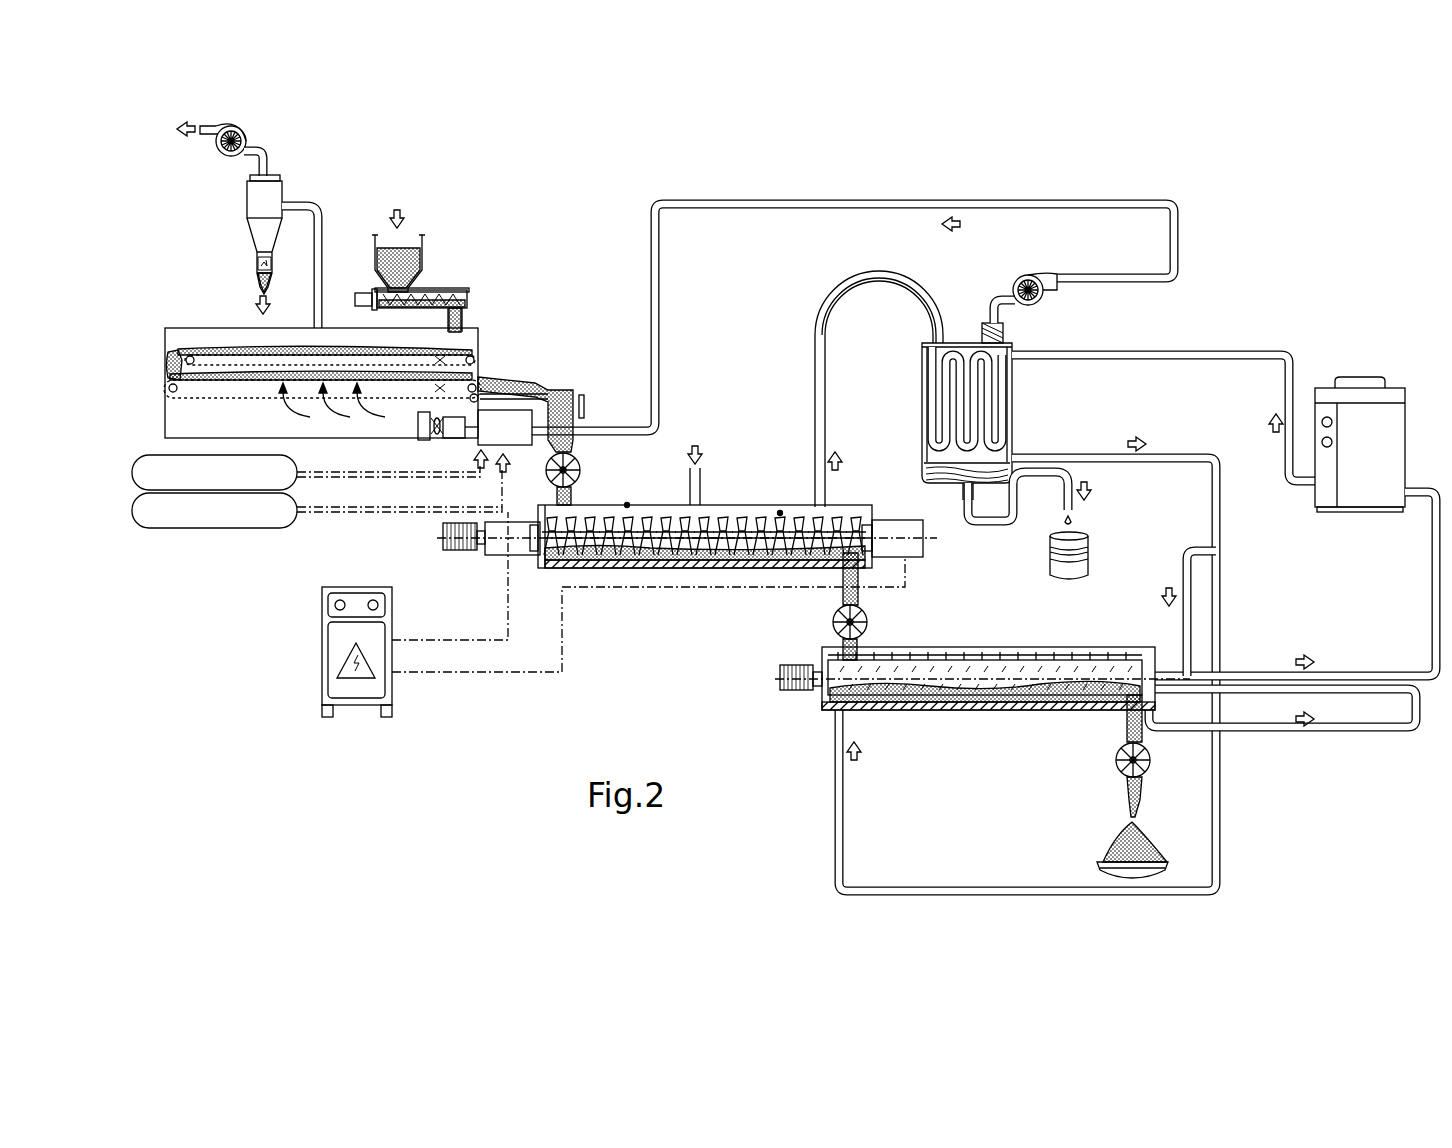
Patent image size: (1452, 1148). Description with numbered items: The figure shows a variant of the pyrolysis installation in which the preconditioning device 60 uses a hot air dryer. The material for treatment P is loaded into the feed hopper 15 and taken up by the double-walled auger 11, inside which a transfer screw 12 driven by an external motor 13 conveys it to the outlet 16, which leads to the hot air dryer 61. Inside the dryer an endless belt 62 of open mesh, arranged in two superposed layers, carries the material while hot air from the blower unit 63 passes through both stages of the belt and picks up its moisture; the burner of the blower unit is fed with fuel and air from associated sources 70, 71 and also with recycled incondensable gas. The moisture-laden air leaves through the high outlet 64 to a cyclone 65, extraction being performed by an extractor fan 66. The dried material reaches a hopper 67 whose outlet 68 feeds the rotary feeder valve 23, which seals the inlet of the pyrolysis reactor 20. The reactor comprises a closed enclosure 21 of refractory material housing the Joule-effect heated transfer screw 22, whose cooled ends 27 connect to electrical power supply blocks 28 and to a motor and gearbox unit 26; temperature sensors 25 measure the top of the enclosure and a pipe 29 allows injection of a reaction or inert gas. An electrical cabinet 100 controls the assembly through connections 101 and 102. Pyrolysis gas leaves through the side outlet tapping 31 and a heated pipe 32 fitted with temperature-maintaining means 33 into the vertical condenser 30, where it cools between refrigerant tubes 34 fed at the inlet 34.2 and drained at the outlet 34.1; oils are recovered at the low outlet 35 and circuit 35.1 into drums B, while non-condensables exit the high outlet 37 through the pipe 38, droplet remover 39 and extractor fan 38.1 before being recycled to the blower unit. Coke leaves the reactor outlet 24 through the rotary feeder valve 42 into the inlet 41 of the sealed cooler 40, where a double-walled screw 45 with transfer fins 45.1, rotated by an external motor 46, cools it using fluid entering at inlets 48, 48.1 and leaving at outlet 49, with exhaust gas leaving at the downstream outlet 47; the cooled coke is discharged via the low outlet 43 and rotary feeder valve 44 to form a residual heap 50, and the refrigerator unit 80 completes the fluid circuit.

The double-walled auger 11 is at (458, 291).
The transfer screw 12 is at (423, 291).
The external motor 13 is at (357, 293).
The feed hopper 15 is at (372, 237).
The outlet 16 is at (478, 296).
The pyrolysis reactor 20 is at (677, 532).
The closed enclosure 21 is at (648, 572).
The transfer screw 22 is at (683, 503).
The rotary feeder valve 23 is at (548, 467).
The outlet 24 is at (843, 598).
The temperature sensors 25 is at (628, 504).
The motor and gearbox unit 26 is at (460, 551).
The ends of the heating screw 27 is at (531, 530).
The blocks 28 is at (494, 556).
The pipe 29 is at (705, 483).
The vertical condenser 30 is at (947, 398).
The outlet tapping 31 is at (826, 490).
The pipe 32 is at (826, 343).
The temperature-maintaining means 33 is at (815, 363).
The tubes 34 is at (1003, 393).
The refrigerant circuit outlet 34.1 is at (1018, 452).
The refrigerant circuit inlet 34.2 is at (1018, 348).
The low outlet 35 is at (963, 488).
The circuit 35.1 is at (1000, 525).
The high outlet 37 is at (950, 342).
The pipe 38 is at (1000, 297).
The extractor fan 38.1 is at (1027, 273).
The droplet remover 39 is at (987, 313).
The sealed cooler 40 is at (1085, 678).
The inlet 41 is at (841, 650).
The rotary feeder valve 42 is at (869, 633).
The low outlet 43 is at (1118, 742).
The rotary feeder valve 44 is at (1118, 770).
The double-walled screw 45 is at (1087, 660).
The transfer fins 45.1 is at (943, 653).
The external motor 46 is at (795, 690).
The downstream outlet 47 is at (1205, 672).
The inlet 48 is at (836, 712).
The inlet 48.1 is at (1189, 647).
The outlet 49 is at (1108, 710).
The residual heap 50 is at (1147, 827).
The preconditioning device 60 is at (449, 257).
The hot air dryer 61 is at (305, 379).
The endless belt 62 is at (218, 328).
The blower unit 63 is at (458, 443).
The high outlet 64 is at (298, 203).
The cyclone 65 is at (247, 200).
The extractor fan 66 is at (233, 126).
The hopper 67 is at (586, 406).
The outlet 68 is at (580, 448).
The fuel source 70 is at (297, 456).
The air source 71 is at (270, 528).
The refrigerator unit 80 is at (1367, 497).
The cabinet 100 is at (321, 650).
The connection 101 is at (438, 640).
The connection 102 is at (450, 673).
The material for treatment P is at (417, 236).
The drums B is at (1088, 548).